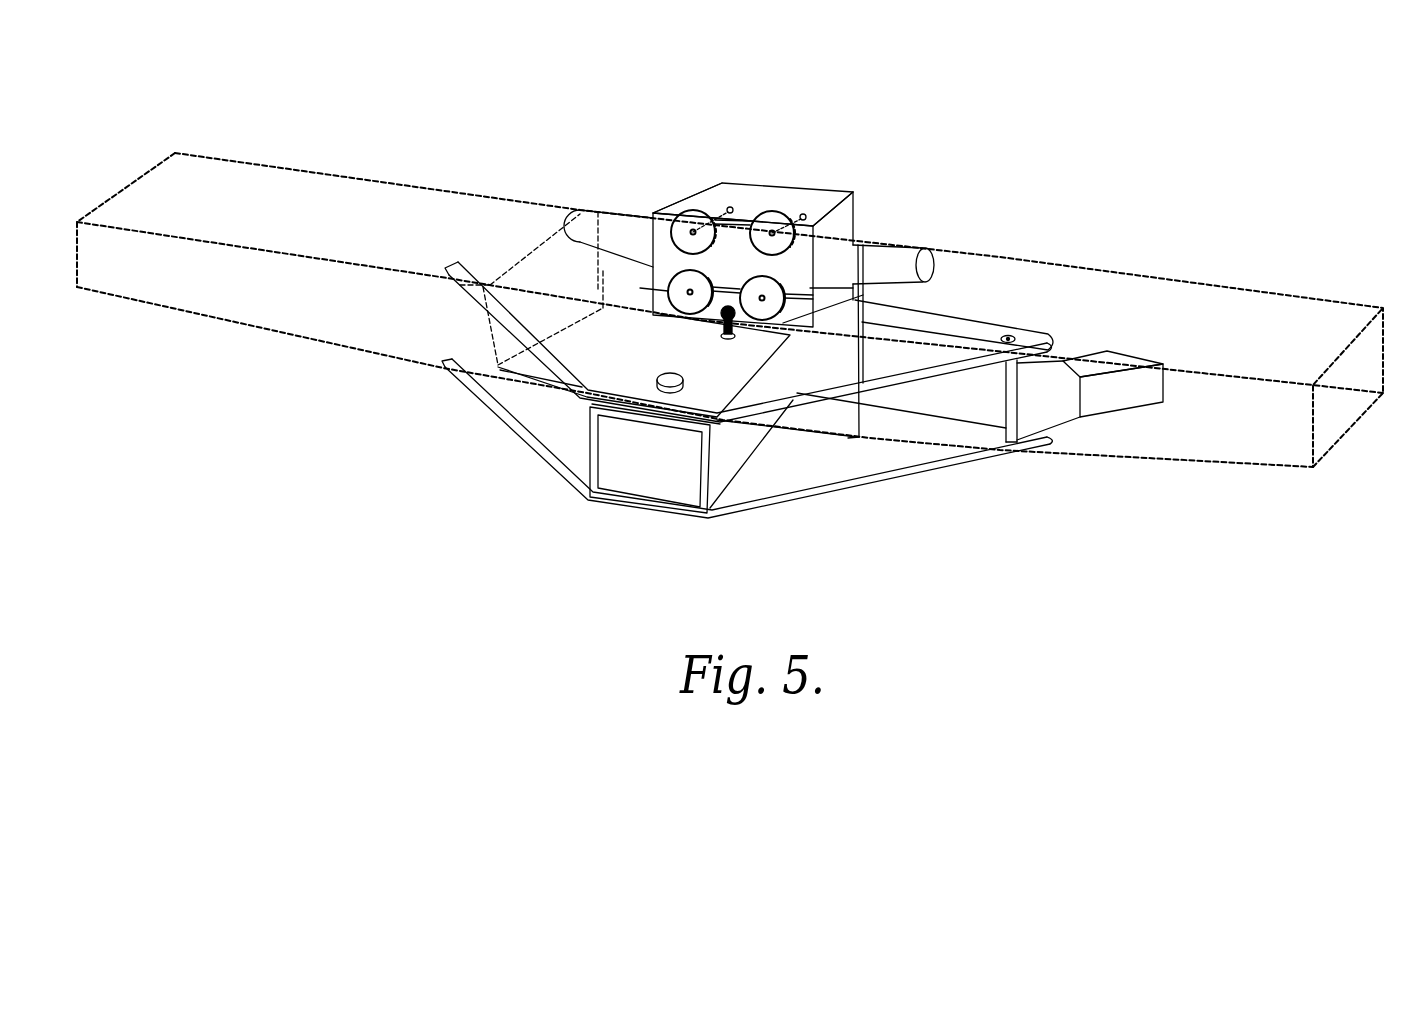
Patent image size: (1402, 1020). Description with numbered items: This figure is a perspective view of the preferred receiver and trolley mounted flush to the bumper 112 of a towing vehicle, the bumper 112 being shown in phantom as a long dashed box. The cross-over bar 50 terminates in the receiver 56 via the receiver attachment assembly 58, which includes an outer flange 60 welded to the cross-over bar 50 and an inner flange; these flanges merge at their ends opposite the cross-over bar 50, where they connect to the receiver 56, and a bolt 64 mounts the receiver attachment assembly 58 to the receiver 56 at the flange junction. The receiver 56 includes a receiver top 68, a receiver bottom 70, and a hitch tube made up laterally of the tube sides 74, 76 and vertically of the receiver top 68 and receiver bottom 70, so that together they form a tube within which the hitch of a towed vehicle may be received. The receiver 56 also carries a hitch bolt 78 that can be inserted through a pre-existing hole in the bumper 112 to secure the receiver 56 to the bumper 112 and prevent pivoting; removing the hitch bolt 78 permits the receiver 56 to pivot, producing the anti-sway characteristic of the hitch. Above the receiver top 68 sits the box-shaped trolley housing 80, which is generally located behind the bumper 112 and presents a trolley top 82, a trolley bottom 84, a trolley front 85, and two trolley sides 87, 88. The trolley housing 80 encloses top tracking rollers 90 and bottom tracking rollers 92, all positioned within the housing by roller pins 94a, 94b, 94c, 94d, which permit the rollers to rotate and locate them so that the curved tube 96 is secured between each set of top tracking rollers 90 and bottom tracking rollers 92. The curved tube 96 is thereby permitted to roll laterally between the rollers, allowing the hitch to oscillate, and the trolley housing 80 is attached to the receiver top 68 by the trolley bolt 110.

The cross-over bar 50 is at (1150, 377).
The receiver 56 is at (747, 417).
The receiver attachment assembly 58 is at (1082, 340).
The outer flange 60 is at (1062, 415).
The bolt 64 is at (1010, 334).
The receiver top 68 is at (923, 368).
The receiver bottom 70 is at (870, 463).
The tube side 74 is at (605, 448).
The tube side 76 is at (722, 470).
The hitch bolt 78 is at (658, 378).
The trolley housing 80 is at (758, 170).
The trolley top 82 is at (851, 182).
The trolley bottom 84 is at (858, 320).
The trolley front 85 is at (636, 274).
The trolley side 87 is at (866, 205).
The trolley side 88 is at (643, 198).
The top tracking rollers 90 is at (693, 208).
The bottom tracking rollers 92 is at (683, 305).
The roller pin 94a is at (697, 228).
The roller pin 94b is at (773, 231).
The roller pin 94c is at (763, 296).
The roller pin 94d is at (688, 292).
The curved tube 96 is at (932, 248).
The trolley bolt 110 is at (738, 330).
The bumper 112 is at (362, 200).